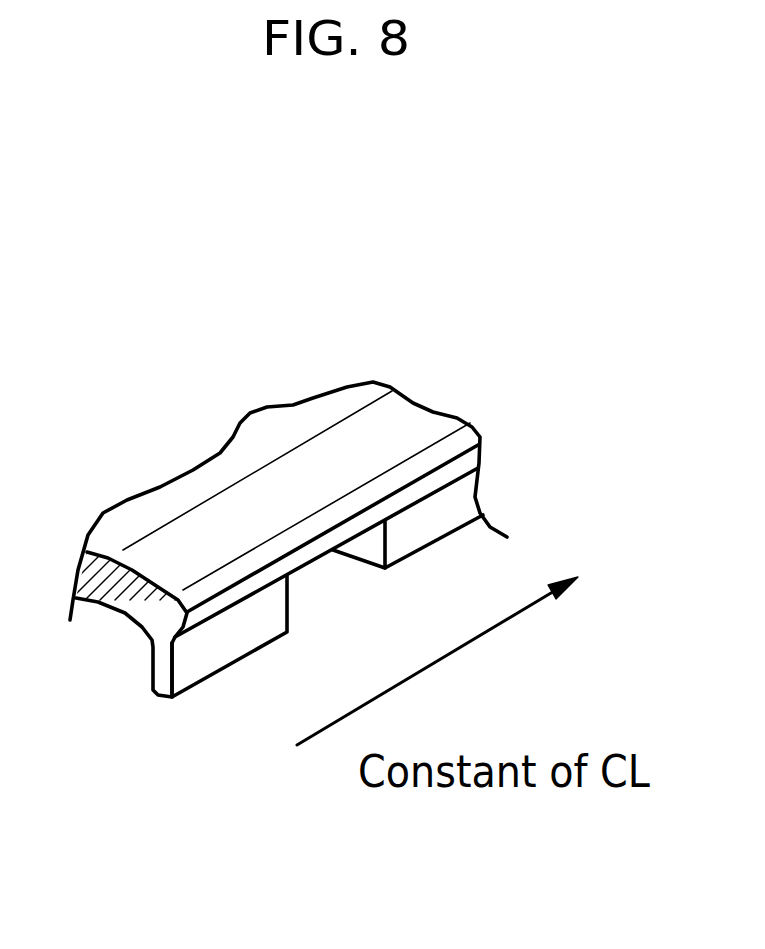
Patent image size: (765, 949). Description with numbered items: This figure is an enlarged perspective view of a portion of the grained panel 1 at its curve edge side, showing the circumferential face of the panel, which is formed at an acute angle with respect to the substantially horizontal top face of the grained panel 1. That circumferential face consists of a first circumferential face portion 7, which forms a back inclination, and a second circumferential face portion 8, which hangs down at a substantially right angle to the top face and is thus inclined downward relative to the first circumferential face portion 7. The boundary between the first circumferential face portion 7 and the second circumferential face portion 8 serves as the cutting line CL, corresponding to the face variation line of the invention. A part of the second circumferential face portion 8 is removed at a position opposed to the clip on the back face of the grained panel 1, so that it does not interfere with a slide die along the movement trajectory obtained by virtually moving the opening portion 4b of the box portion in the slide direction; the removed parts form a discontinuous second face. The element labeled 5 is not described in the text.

The grained panel 1 is at (208, 407).
The top plate portion 5 is at (397, 423).
The first circumferential face portion 7 is at (465, 458).
The second circumferential face portion 8 is at (213, 653).
The opening portion 4b is at (320, 575).
The cutting line CL is at (418, 498).